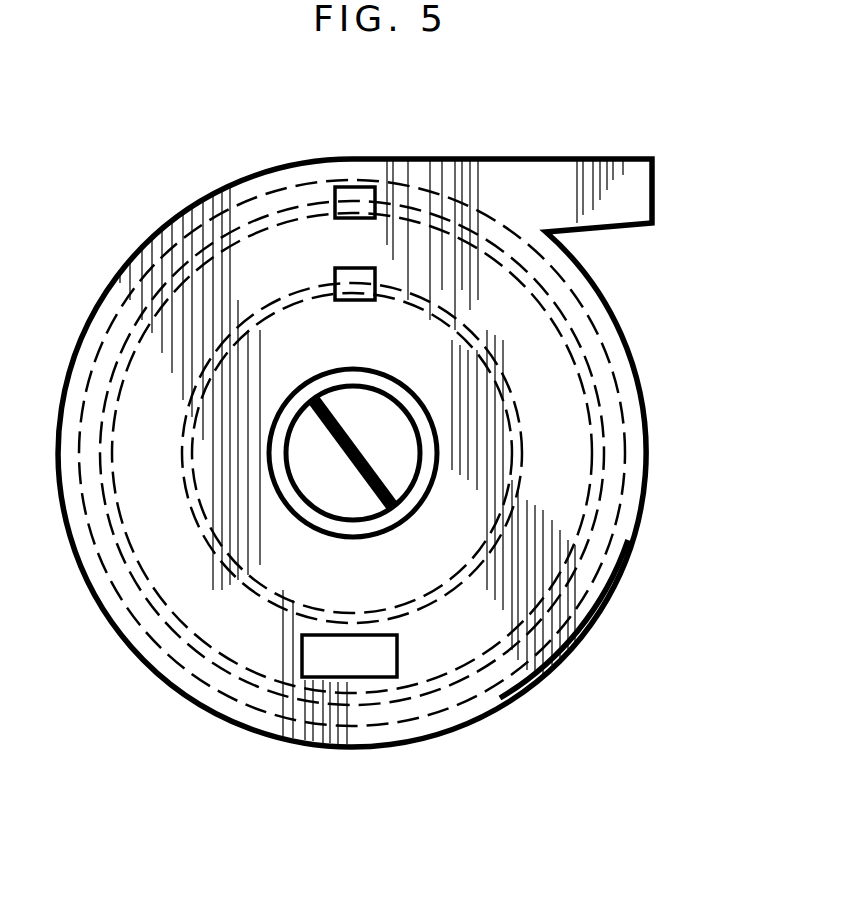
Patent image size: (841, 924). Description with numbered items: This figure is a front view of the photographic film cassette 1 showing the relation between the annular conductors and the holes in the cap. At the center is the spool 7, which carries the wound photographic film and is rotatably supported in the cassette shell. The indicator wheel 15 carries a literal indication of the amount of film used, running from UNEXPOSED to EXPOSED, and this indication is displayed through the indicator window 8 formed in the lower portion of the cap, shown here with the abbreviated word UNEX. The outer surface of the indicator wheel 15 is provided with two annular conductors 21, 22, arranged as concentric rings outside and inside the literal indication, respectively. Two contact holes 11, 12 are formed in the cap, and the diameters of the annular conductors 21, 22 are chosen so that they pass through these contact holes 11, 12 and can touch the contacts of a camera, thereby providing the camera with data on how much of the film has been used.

The photographic film cassette 1 is at (153, 232).
The spool 7 is at (278, 495).
The indicator window 8 is at (345, 680).
The contact hole 11 is at (355, 187).
The contact hole 12 is at (358, 268).
The indicator wheel 15 is at (558, 663).
The annular conductor 21 is at (597, 385).
The annular conductor 22 is at (523, 467).